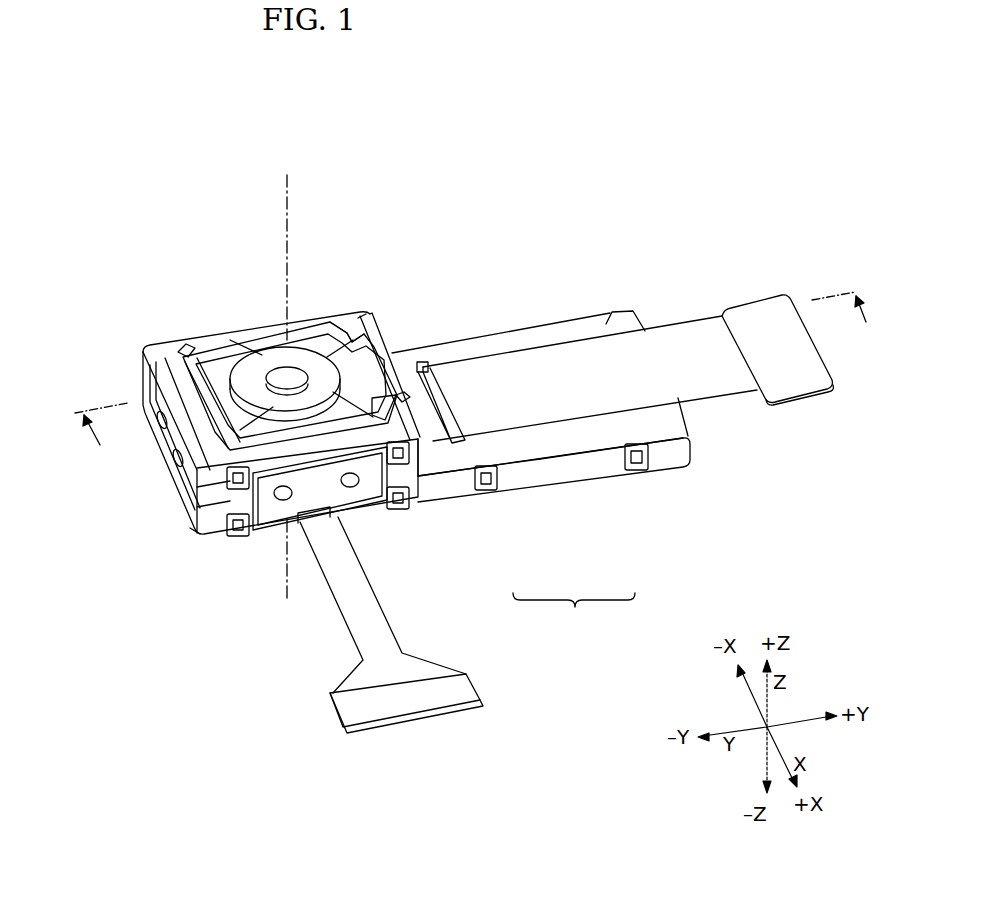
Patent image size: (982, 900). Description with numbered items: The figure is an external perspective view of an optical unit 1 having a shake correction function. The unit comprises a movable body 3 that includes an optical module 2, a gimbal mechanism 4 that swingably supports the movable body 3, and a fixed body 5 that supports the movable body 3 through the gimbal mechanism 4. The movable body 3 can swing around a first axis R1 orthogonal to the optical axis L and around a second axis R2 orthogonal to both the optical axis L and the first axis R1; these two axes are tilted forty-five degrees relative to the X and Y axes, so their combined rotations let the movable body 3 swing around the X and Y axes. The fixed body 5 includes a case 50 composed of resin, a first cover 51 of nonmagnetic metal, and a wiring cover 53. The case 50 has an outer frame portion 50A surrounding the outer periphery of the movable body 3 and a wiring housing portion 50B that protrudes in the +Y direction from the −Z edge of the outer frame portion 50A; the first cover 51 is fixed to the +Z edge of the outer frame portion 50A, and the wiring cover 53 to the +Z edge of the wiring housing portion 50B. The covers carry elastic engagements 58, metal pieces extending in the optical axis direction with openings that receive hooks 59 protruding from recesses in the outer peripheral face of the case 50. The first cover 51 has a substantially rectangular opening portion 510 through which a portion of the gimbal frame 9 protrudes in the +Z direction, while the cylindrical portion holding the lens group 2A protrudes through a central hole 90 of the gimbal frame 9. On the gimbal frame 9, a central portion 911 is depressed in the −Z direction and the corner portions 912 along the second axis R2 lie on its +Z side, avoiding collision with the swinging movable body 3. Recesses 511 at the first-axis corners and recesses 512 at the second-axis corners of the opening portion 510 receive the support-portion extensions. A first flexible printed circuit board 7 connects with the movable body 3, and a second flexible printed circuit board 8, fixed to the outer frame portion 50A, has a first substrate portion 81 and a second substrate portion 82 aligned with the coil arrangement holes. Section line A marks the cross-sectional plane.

The optical unit having a shake correction function 1 is at (610, 185).
The optical module 2 is at (262, 370).
The movable body 3 is at (284, 340).
The lens group 2A is at (288, 377).
The gimbal mechanism 4 is at (347, 346).
The gimbal frame 9 is at (208, 355).
The central portion 911 is at (327, 337).
The corner portions 912 is at (197, 350).
The fixed body 5 is at (363, 438).
The case 50 is at (416, 471).
The outer frame portion 50A is at (422, 497).
The wiring housing portion 50B is at (572, 483).
The first cover 51 is at (183, 392).
The opening portion 510 is at (372, 398).
The recesses 511 is at (366, 312).
The recesses 512 is at (183, 356).
The wiring cover 53 is at (610, 323).
The elastic engagements 58 is at (247, 537).
The hooks 59 is at (236, 536).
The first flexible printed circuit board 7 is at (700, 383).
The second flexible printed circuit board 8 is at (378, 620).
The first substrate portion 81 is at (167, 440).
The second substrate portion 82 is at (266, 548).
The central hole 90 is at (193, 472).
The optical axis L is at (290, 198).
The first axis R1 is at (430, 268).
The second axis R2 is at (128, 338).
The section line A- A is at (480, 379).